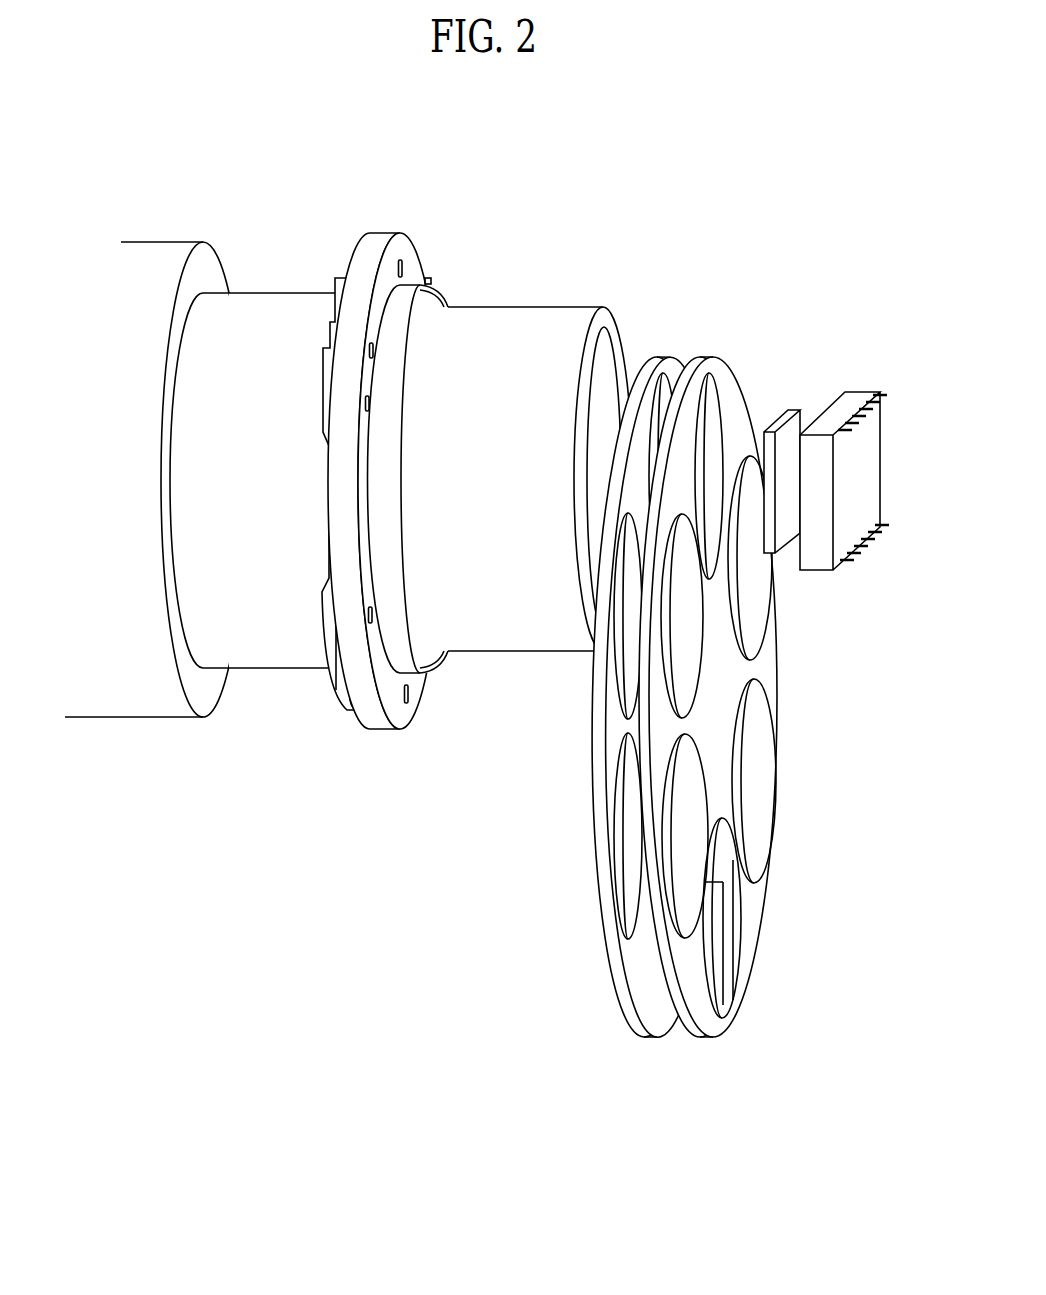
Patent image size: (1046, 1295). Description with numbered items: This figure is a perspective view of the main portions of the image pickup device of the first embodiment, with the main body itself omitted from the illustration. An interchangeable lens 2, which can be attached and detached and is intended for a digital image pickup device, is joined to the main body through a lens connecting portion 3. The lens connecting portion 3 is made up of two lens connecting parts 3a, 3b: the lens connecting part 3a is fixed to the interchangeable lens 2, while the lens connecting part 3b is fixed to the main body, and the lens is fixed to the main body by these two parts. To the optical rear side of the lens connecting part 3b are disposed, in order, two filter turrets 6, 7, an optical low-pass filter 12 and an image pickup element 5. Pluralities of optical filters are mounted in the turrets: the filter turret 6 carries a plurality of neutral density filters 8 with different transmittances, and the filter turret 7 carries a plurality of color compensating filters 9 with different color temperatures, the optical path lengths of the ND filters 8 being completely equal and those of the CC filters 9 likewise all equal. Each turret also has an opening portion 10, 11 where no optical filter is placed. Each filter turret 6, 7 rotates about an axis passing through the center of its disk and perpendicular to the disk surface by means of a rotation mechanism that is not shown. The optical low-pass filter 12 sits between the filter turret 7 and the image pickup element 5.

The interchangeable lens 2 is at (257, 320).
The lens connecting portion 3 is at (383, 416).
The lens connecting part 3a is at (345, 283).
The lens connecting part 3b is at (382, 252).
The image pickup element 5 is at (853, 403).
The filter turret 6 is at (597, 739).
The filter turret 7 is at (753, 758).
The neutral density (ND) filters 8 is at (637, 843).
The color compensating (CC) filters 9 is at (757, 803).
The opening portion 10 is at (650, 1027).
The opening portion 11 is at (715, 972).
The optical low-pass filter 12 is at (790, 437).